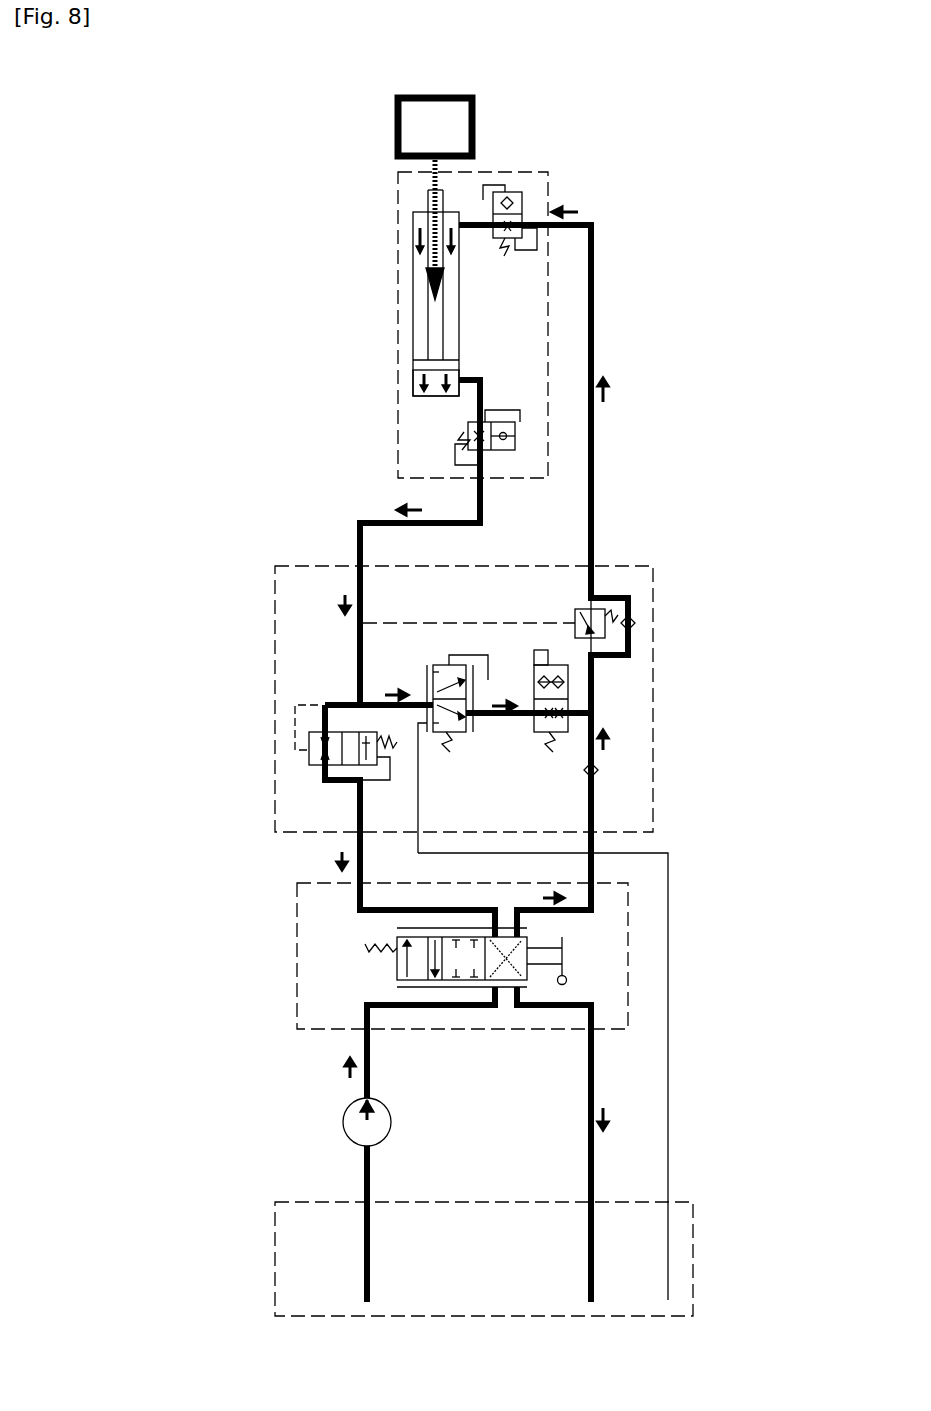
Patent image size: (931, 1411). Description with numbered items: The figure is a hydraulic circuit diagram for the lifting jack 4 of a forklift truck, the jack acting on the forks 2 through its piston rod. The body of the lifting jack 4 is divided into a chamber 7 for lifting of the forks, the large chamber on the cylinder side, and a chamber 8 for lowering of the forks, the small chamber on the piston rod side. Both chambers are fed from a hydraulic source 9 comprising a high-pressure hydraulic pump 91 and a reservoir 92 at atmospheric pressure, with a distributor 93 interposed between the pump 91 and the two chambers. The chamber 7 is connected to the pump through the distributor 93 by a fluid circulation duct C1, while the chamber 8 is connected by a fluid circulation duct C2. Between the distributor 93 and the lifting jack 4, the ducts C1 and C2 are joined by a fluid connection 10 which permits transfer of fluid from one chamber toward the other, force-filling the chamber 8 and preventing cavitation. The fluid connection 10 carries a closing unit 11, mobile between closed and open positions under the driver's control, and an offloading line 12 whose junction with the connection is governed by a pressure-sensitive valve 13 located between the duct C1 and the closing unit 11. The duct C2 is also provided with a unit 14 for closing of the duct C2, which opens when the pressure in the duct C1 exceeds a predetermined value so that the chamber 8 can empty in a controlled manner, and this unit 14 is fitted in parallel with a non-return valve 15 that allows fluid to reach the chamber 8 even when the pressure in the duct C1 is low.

The forks 2 is at (477, 105).
The lifting jack 4 is at (413, 313).
The chamber for lifting of the forks 7 is at (413, 386).
The chamber for lowering of the forks 8 is at (413, 222).
The hydraulic source 9 is at (402, 1207).
The fluid connection 10 is at (606, 770).
The closing unit 11 is at (566, 686).
The offloading line 12 is at (670, 912).
The pressure-sensitive valve 13 is at (433, 676).
The unit for closing of the duct C2 14 is at (610, 598).
The non-return valve 15 is at (634, 624).
The hydraulic pump 91 is at (343, 1122).
The reservoir 92 is at (441, 1256).
The distributor 93 is at (397, 942).
The fluid circulation duct C1 is at (380, 518).
The fluid circulation duct C2 is at (593, 440).